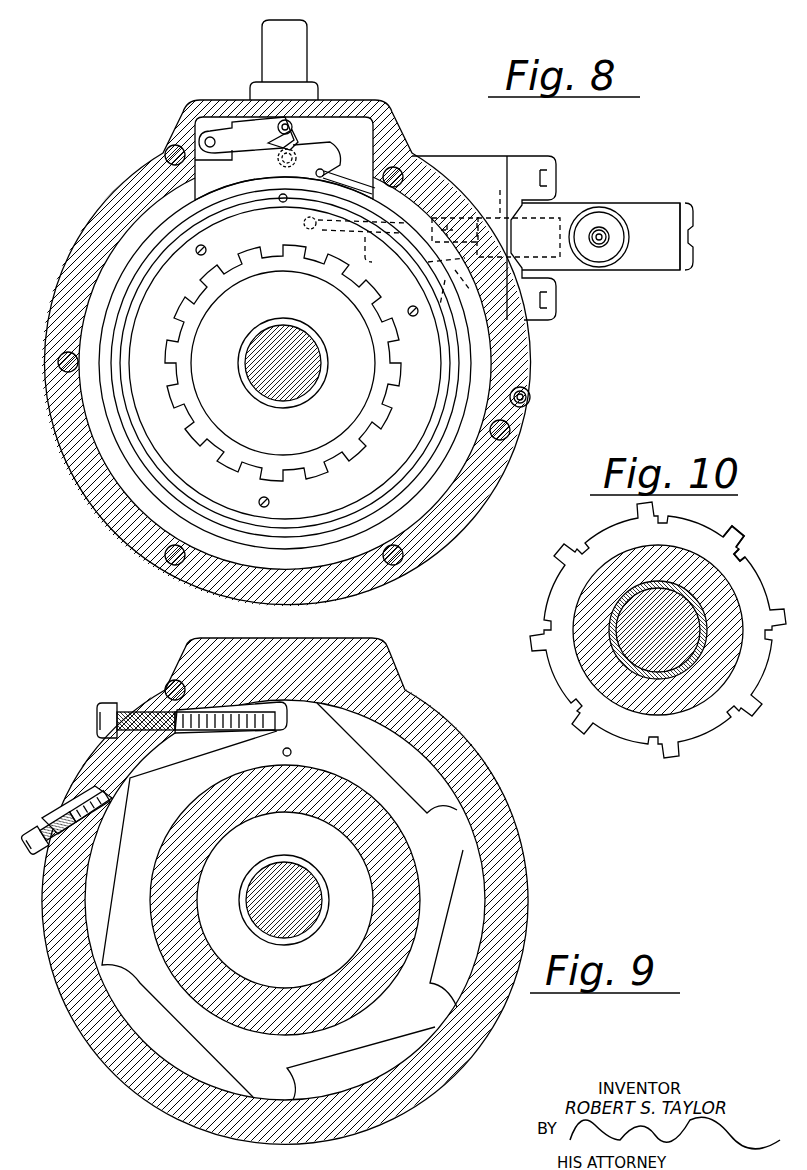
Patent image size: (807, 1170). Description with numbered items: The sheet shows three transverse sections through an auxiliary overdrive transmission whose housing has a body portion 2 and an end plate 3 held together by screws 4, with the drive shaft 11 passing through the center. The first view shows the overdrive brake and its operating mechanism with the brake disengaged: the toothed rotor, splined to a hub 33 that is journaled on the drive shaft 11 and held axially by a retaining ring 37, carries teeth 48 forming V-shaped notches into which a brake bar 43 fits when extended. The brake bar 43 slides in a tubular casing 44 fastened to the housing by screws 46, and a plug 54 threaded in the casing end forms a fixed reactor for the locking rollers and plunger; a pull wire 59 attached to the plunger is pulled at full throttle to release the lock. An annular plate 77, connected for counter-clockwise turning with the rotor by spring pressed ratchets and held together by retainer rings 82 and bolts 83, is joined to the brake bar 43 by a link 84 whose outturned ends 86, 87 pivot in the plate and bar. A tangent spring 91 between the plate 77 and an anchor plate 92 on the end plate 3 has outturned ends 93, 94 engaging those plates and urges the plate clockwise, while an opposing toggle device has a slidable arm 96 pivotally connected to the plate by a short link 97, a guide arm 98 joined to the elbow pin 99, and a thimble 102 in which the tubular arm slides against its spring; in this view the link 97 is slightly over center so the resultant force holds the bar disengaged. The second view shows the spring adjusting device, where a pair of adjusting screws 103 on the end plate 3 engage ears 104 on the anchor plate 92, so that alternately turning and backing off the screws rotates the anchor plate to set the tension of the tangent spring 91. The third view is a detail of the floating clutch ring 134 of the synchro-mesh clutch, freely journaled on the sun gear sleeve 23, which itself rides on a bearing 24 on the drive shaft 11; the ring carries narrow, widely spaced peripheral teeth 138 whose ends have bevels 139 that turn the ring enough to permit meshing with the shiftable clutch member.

In FIG. 8, the body portion 2 is at (108, 207).
In FIG. 9, the body portion 2 is at (285, 891).
In FIG. 9, the end plate 3 is at (430, 728).
In FIG. 8, the screws 4 is at (398, 169).
In FIG. 9, the screws 4 is at (172, 690).
In FIG. 8, the drive shaft 11 is at (265, 385).
In FIG. 9, the drive shaft 11 is at (268, 923).
In FIG. 10, the drive shaft 11 is at (668, 672).
In FIG. 10, the sun gear sleeve 23 is at (592, 658).
In FIG. 10, the bearing 24 is at (642, 672).
In FIG. 8, the hub 33 is at (205, 341).
In FIG. 8, the retaining ring 37 is at (323, 381).
In FIG. 9, the retaining ring 37 is at (324, 918).
In FIG. 8, the brake bar 43 is at (500, 215).
In FIG. 8, the tubular casing 44 is at (650, 215).
In FIG. 8, the screws 46 is at (548, 166).
In FIG. 8, the teeth 48 is at (460, 295).
In FIG. 8, the plug 54 is at (693, 238).
In FIG. 8, the pull wire 59 is at (600, 237).
In FIG. 8, the annular plate 77 is at (313, 153).
In FIG. 8, the retainer rings 82 is at (195, 288).
In FIG. 8, the bolts 83 is at (207, 250).
In FIG. 8, the link 84 is at (366, 250).
In FIG. 8, the outturned end 86 is at (318, 233).
In FIG. 8, the outturned end 87 is at (455, 205).
In FIG. 8, the tangent spring 91 is at (148, 487).
In FIG. 9, the anchor plate 92 is at (185, 1020).
In FIG. 8, the outturned end 93 is at (325, 174).
In FIG. 8, the outturned end 94 is at (284, 203).
In FIG. 9, the outturned end 94 is at (292, 752).
In FIG. 8, the slidable arm 96 is at (328, 106).
In FIG. 8, the link 97 is at (292, 136).
In FIG. 8, the guide arm 98 is at (268, 130).
In FIG. 8, the elbow pin 99 is at (278, 144).
In FIG. 8, the thimble 102 is at (307, 42).
In FIG. 9, the adjusting screws 103 is at (120, 703).
In FIG. 9, the ears 104 is at (312, 716).
In FIG. 10, the floating clutch ring 134 is at (550, 597).
In FIG. 10, the peripheral teeth 138 is at (740, 538).
In FIG. 10, the bevels 139 is at (732, 553).